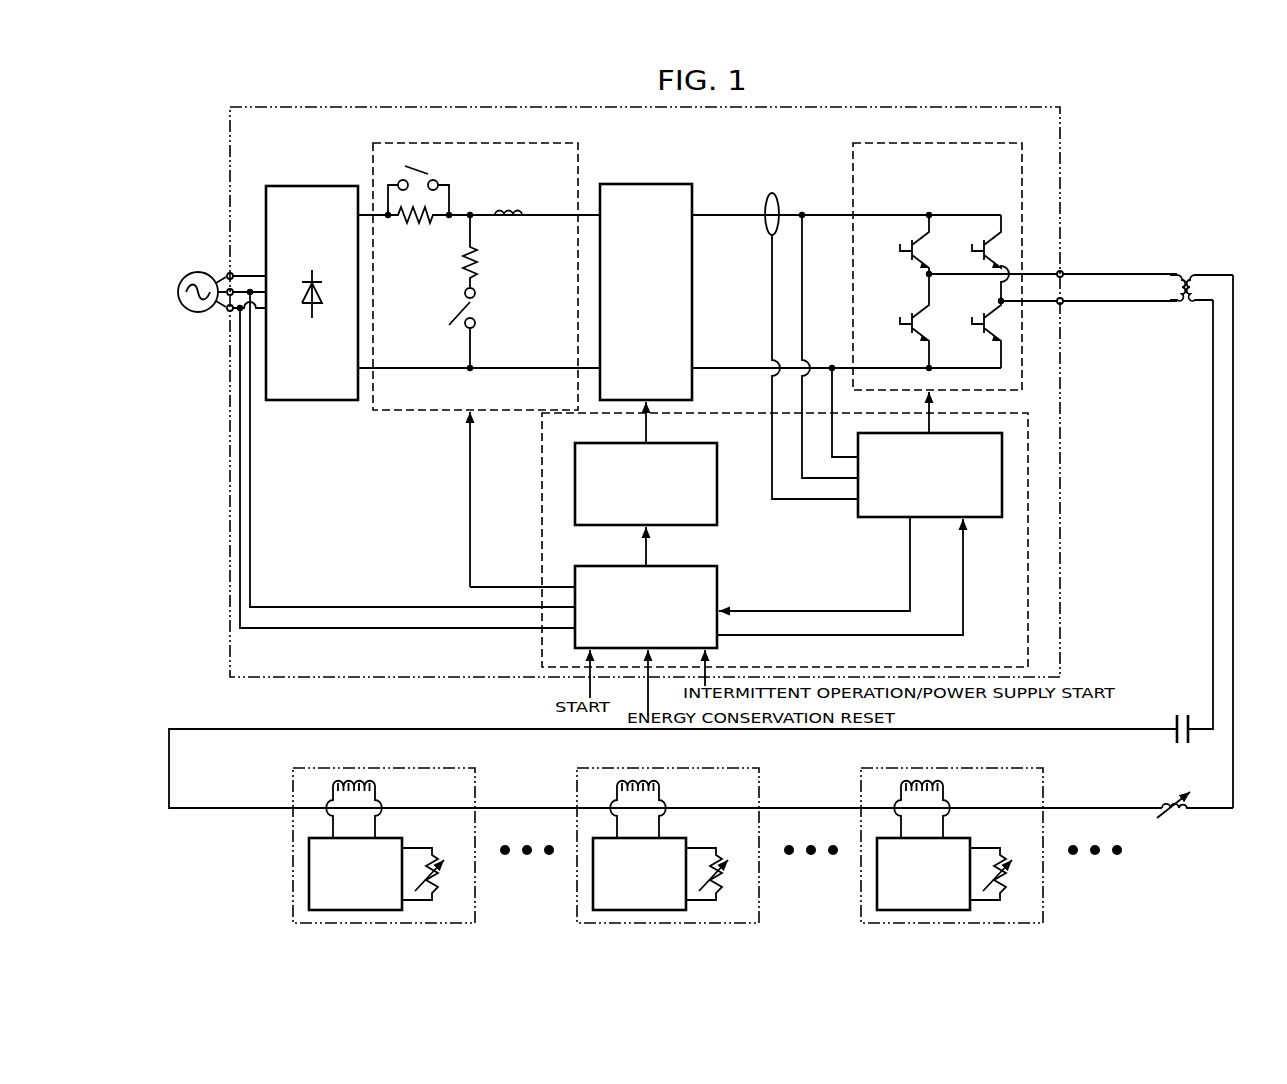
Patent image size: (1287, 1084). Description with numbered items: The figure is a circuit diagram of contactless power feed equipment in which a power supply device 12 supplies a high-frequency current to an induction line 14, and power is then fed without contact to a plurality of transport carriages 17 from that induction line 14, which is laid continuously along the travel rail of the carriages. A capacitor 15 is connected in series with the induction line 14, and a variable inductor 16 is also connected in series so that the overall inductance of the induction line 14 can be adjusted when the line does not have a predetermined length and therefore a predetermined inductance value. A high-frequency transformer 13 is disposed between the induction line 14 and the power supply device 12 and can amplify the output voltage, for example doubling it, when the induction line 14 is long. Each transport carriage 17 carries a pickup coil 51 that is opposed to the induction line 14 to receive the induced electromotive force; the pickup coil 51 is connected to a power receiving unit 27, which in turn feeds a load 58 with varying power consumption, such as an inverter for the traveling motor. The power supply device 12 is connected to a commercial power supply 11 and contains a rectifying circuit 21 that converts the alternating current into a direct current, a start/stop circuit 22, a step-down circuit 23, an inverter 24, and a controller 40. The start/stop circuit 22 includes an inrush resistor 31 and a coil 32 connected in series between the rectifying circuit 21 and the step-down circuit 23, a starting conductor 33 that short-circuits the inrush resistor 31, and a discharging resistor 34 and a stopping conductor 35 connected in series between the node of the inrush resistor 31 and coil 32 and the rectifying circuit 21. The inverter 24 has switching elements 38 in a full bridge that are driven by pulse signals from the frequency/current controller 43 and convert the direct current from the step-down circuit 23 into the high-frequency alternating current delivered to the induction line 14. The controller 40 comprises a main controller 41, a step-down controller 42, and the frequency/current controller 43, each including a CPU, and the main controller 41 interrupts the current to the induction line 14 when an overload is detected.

The commercial power supply 11 is at (198, 272).
The power supply device 12 is at (228, 658).
The high-frequency transformer 13 is at (1183, 270).
The induction line 14 is at (1218, 272).
The capacitor 15 is at (1182, 712).
The variable inductor 16 is at (1182, 800).
The transport carriage 17 is at (698, 835).
The rectifying circuit 21 is at (335, 186).
The start/stop circuit 22 is at (530, 143).
The step-down circuit 23 is at (642, 184).
The inverter 24 is at (985, 143).
The power receiving unit 27 is at (403, 905).
The inrush resistor 31 is at (415, 218).
The coil (reactor) 32 is at (518, 202).
The starting conductor 33 is at (428, 174).
The discharging resistor 34 is at (480, 253).
The stopping conductor 35 is at (478, 310).
The switching element 38 is at (912, 242).
The controller 40 is at (1018, 411).
The main controller 41 is at (576, 567).
The step-down controller 42 is at (576, 444).
The frequency/current controller 43 is at (990, 433).
The pickup coil 51 is at (375, 794).
The load 58 is at (440, 855).